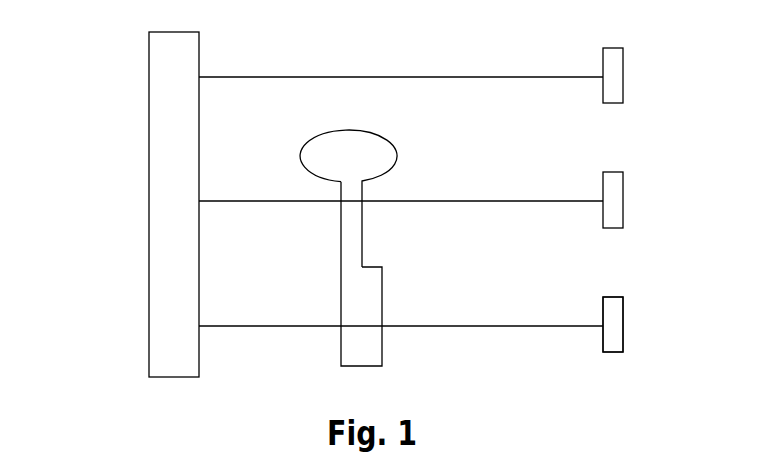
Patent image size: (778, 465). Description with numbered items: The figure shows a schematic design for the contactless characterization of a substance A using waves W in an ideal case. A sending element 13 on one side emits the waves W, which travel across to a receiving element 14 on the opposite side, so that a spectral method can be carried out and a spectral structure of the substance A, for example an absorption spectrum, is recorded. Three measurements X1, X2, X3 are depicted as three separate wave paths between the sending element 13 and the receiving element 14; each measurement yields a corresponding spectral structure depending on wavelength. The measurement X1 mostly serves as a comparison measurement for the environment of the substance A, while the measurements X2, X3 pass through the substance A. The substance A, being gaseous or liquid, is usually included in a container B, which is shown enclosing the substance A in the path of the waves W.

The sending element 13 is at (163, 302).
The receiving element 14 is at (614, 338).
The waves W is at (387, 77).
The substance A is at (365, 345).
The container B is at (358, 238).
The measurement X1 is at (636, 75).
The measurement X2 is at (636, 200).
The measurement X3 is at (636, 324).